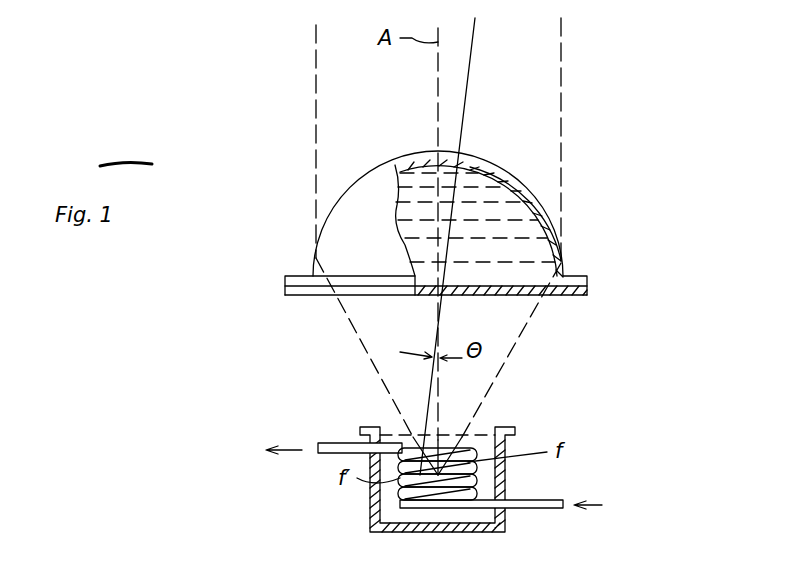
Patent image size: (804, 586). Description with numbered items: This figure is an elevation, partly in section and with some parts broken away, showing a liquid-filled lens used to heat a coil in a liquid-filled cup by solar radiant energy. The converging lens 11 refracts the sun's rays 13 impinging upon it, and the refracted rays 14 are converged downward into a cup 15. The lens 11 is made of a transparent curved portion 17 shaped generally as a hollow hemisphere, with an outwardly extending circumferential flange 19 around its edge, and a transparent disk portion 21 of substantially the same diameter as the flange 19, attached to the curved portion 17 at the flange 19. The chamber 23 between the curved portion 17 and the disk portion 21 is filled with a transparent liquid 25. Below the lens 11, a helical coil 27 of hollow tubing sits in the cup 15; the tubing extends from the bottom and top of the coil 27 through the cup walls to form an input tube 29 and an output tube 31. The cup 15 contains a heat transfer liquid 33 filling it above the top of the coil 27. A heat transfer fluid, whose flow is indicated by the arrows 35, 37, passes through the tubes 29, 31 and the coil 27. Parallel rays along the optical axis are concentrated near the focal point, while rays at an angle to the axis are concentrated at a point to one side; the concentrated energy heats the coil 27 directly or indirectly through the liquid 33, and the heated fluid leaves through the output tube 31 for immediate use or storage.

The converging lens 11 is at (505, 166).
The sun's rays 13 is at (316, 57).
The refracted rays 14 is at (376, 368).
The cup 15 is at (503, 445).
The transparent curved portion 17 is at (517, 187).
The circumferential flange 19 is at (284, 275).
The transparent disk portion 21 is at (295, 296).
The chamber 23 is at (427, 188).
The transparent liquid 25 is at (498, 238).
The helical coil 27 is at (478, 481).
The input tube 29 is at (521, 512).
The output tube 31 is at (335, 454).
The heat transfer liquid 33 is at (396, 427).
The arrow indicating heat transfer fluid flow 35 is at (602, 505).
The arrow indicating heat transfer fluid flow 37 is at (298, 449).